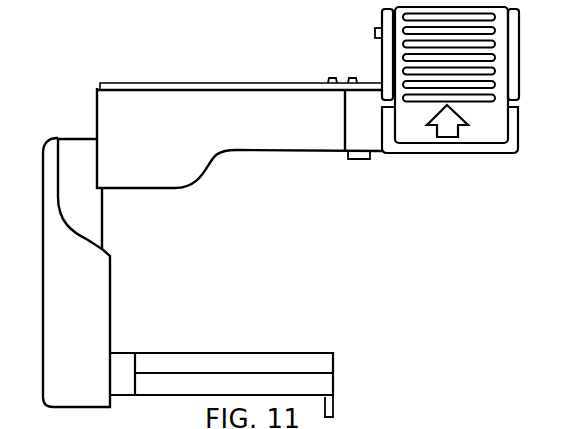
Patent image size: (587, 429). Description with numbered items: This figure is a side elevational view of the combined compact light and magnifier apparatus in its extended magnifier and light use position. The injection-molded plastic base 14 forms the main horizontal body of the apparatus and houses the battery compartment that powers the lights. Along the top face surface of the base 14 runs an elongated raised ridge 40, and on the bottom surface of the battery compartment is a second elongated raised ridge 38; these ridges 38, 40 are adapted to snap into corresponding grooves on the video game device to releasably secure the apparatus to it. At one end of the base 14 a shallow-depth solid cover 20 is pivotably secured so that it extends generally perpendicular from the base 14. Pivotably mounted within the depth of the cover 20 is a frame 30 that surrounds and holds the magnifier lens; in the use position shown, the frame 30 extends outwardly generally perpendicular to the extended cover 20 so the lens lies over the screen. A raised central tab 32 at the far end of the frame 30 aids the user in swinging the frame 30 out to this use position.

The base 14 is at (159, 138).
The cover 20 is at (95, 324).
The frame 30 is at (328, 382).
The raised central tab 32 is at (334, 406).
The elongated raised ridge 38 is at (375, 33).
The elongated raised ridge 40 is at (352, 82).